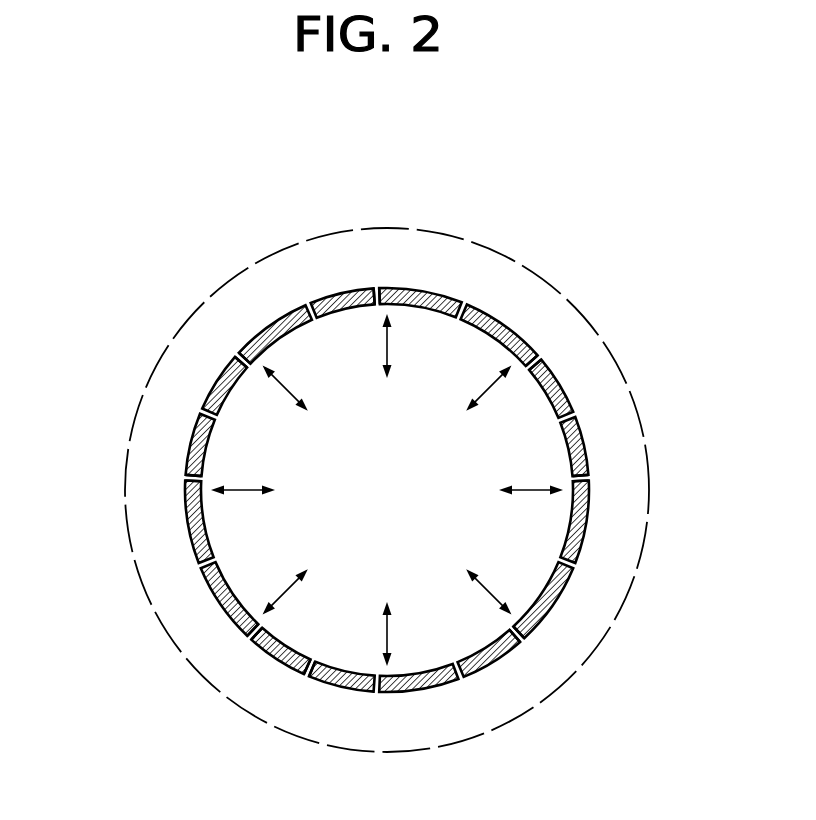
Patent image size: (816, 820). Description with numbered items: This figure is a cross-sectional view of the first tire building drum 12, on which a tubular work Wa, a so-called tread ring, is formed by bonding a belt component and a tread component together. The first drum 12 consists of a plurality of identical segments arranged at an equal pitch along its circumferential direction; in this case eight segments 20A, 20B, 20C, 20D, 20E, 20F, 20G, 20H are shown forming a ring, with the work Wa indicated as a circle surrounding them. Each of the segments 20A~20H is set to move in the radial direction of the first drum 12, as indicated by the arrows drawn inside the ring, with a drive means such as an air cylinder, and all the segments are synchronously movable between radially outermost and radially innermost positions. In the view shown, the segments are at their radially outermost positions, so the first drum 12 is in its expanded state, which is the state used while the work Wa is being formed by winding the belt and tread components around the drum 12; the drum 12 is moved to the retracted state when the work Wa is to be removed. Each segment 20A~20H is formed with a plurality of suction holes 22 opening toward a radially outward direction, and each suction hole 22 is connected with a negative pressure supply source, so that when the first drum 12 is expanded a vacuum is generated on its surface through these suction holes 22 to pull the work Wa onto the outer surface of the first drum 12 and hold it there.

The first drum 12 is at (538, 324).
The tubular work Wa is at (505, 256).
The segment 20A is at (412, 284).
The segment 20B is at (567, 397).
The segment 20C is at (583, 530).
The segment 20D is at (500, 650).
The segment 20E is at (320, 680).
The segment 20F is at (260, 647).
The segment 20G is at (192, 542).
The segment 20H is at (223, 368).
The suction hole 22 is at (377, 290).